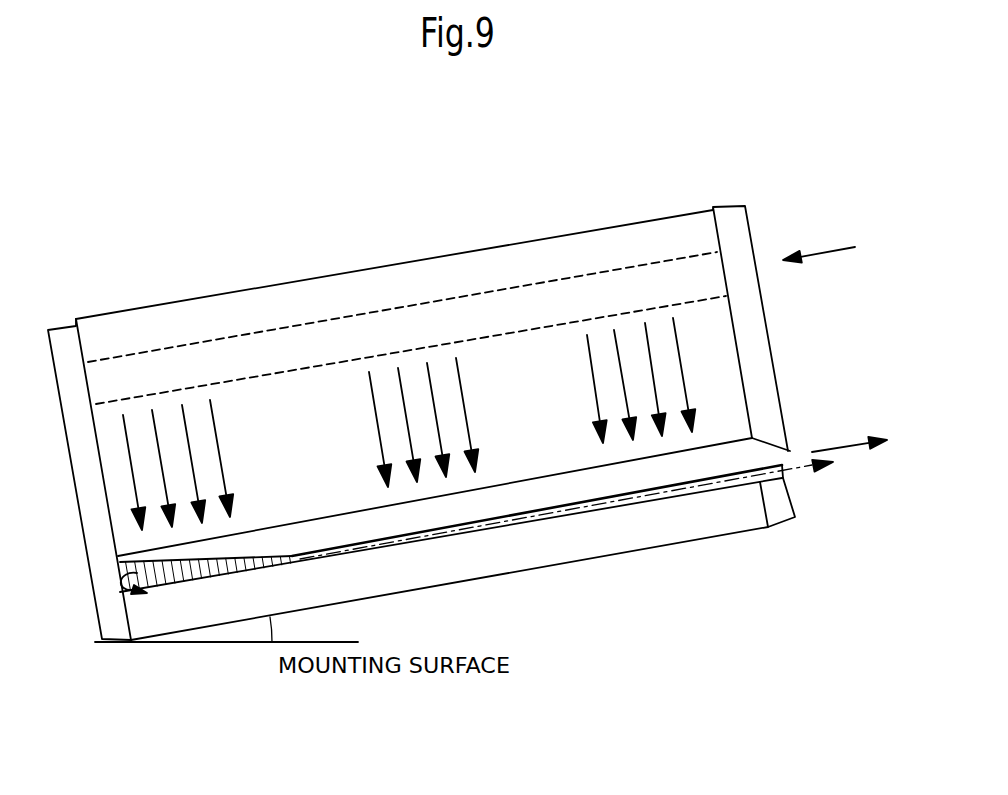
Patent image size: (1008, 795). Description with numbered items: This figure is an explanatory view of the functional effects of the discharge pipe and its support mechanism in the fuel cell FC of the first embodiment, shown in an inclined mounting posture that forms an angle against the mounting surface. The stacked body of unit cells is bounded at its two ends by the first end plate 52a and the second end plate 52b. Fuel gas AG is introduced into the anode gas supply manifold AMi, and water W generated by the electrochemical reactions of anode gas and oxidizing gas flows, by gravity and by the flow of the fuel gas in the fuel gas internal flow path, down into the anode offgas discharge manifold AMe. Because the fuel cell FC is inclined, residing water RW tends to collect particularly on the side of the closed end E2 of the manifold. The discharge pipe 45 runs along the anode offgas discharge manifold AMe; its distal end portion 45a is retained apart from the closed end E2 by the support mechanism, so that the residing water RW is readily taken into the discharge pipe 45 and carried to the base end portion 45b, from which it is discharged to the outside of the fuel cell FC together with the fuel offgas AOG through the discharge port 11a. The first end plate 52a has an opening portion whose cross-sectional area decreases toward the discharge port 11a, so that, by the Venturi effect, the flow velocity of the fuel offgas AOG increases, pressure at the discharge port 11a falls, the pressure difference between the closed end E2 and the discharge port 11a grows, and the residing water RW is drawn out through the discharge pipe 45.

The first end plate 52a is at (730, 228).
The second end plate 52b is at (69, 335).
The discharge port 11a is at (798, 452).
The discharge pipe 45 is at (482, 528).
The distal end portion of the discharge pipe 45a is at (155, 589).
The base end portion of the discharge pipe 45b is at (781, 477).
The fuel cell FC is at (380, 265).
The anode gas supply manifold AMi is at (247, 348).
The anode offgas discharge manifold AMe is at (575, 492).
The water W is at (217, 440).
The fuel gas AG is at (819, 243).
The fuel offgas AOG is at (849, 434).
The residing water RW is at (213, 655).
The closed end E2 is at (105, 639).